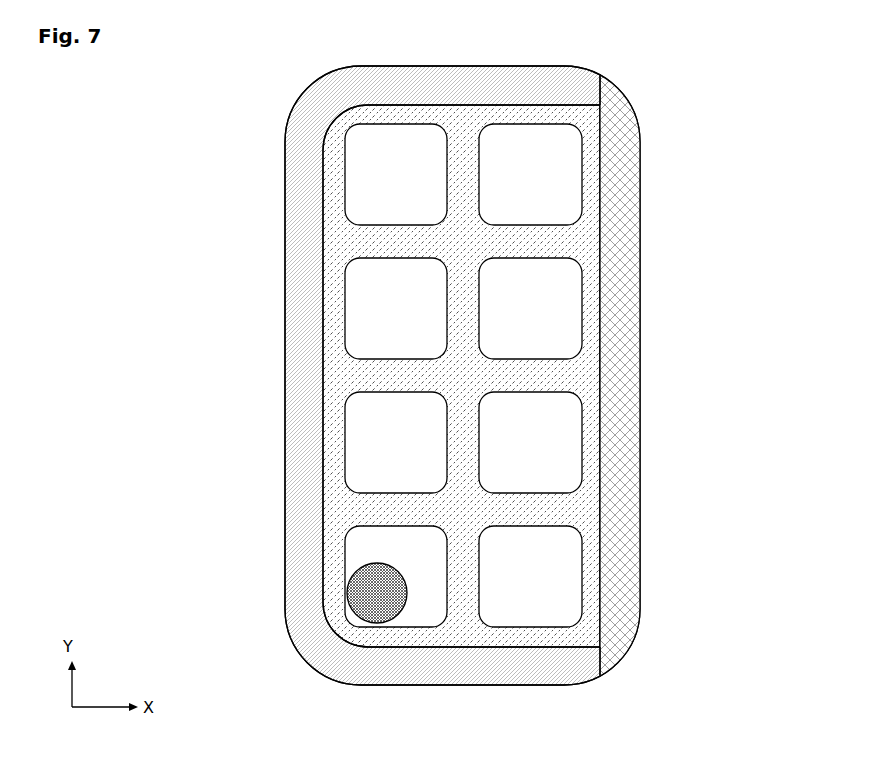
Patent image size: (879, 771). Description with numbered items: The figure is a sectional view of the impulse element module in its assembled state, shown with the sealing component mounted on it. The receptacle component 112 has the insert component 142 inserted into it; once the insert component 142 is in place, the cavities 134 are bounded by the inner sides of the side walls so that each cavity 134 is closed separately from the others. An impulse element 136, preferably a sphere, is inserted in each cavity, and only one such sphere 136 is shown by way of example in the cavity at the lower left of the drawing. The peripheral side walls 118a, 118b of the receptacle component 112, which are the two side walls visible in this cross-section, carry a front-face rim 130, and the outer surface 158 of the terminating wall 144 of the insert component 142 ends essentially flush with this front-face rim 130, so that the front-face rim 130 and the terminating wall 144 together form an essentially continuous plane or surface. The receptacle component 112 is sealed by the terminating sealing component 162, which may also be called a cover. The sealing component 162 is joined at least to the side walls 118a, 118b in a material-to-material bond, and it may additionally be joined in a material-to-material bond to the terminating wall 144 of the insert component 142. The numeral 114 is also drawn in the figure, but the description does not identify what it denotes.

The receptacle component 112 is at (384, 375).
The frame 114 is at (305, 370).
The peripheral side wall 118a is at (436, 78).
The peripheral side wall 118b is at (442, 672).
The front-face rim 130 is at (601, 97).
The cavity 134 is at (463, 375).
The impulse element 136 is at (370, 601).
The insert component 142 is at (570, 240).
The terminating wall 144 is at (587, 422).
The outer surface 158 is at (602, 333).
The sealing component 162 is at (634, 284).